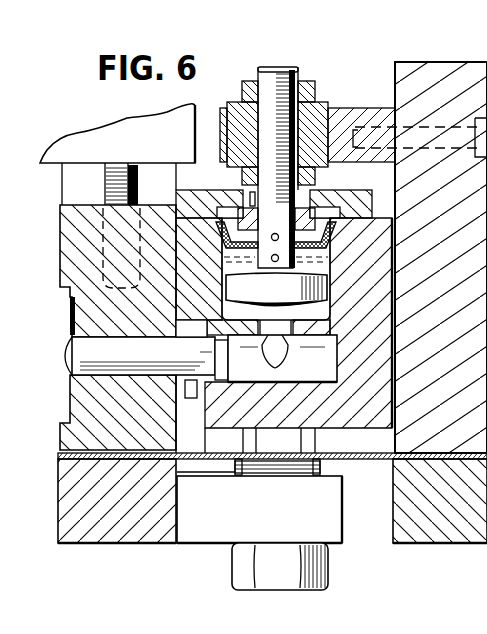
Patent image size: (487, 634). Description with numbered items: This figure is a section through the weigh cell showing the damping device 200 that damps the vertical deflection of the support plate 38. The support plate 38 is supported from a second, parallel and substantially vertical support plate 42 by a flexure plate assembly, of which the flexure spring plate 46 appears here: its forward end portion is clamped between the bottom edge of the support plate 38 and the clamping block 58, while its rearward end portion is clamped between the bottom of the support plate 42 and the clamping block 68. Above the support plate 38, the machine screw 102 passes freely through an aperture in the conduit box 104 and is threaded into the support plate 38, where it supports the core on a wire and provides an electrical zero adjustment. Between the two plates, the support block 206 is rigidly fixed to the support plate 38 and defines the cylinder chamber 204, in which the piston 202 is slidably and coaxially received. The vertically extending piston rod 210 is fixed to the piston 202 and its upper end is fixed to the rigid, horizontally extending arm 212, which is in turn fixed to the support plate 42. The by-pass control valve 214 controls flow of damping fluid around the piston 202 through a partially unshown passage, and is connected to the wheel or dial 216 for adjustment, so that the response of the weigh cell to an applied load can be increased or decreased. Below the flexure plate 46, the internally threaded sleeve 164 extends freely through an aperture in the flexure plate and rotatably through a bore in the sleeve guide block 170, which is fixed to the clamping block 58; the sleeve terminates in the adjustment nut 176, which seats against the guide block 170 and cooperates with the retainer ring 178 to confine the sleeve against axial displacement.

The support plate 38 is at (60, 238).
The support plate 42 is at (471, 62).
The flexure spring plate 46 is at (336, 456).
The clamping block 58 is at (57, 533).
The clamping block 68 is at (393, 513).
The machine screw 102 is at (140, 181).
The conduit box 104 is at (42, 165).
The sleeve 164 is at (248, 441).
The sleeve guide block 170 is at (270, 513).
The adjustment nut 176 is at (330, 571).
The retainer ring 178 is at (322, 466).
The damping device 200 is at (298, 72).
The piston 202 is at (327, 291).
The cylinder chamber 204 is at (326, 268).
The support block 206 is at (395, 283).
The piston rod 210 is at (258, 74).
The arm 212 is at (357, 108).
The by-pass control valve 214 is at (240, 383).
The wheel or dial 216 is at (70, 317).